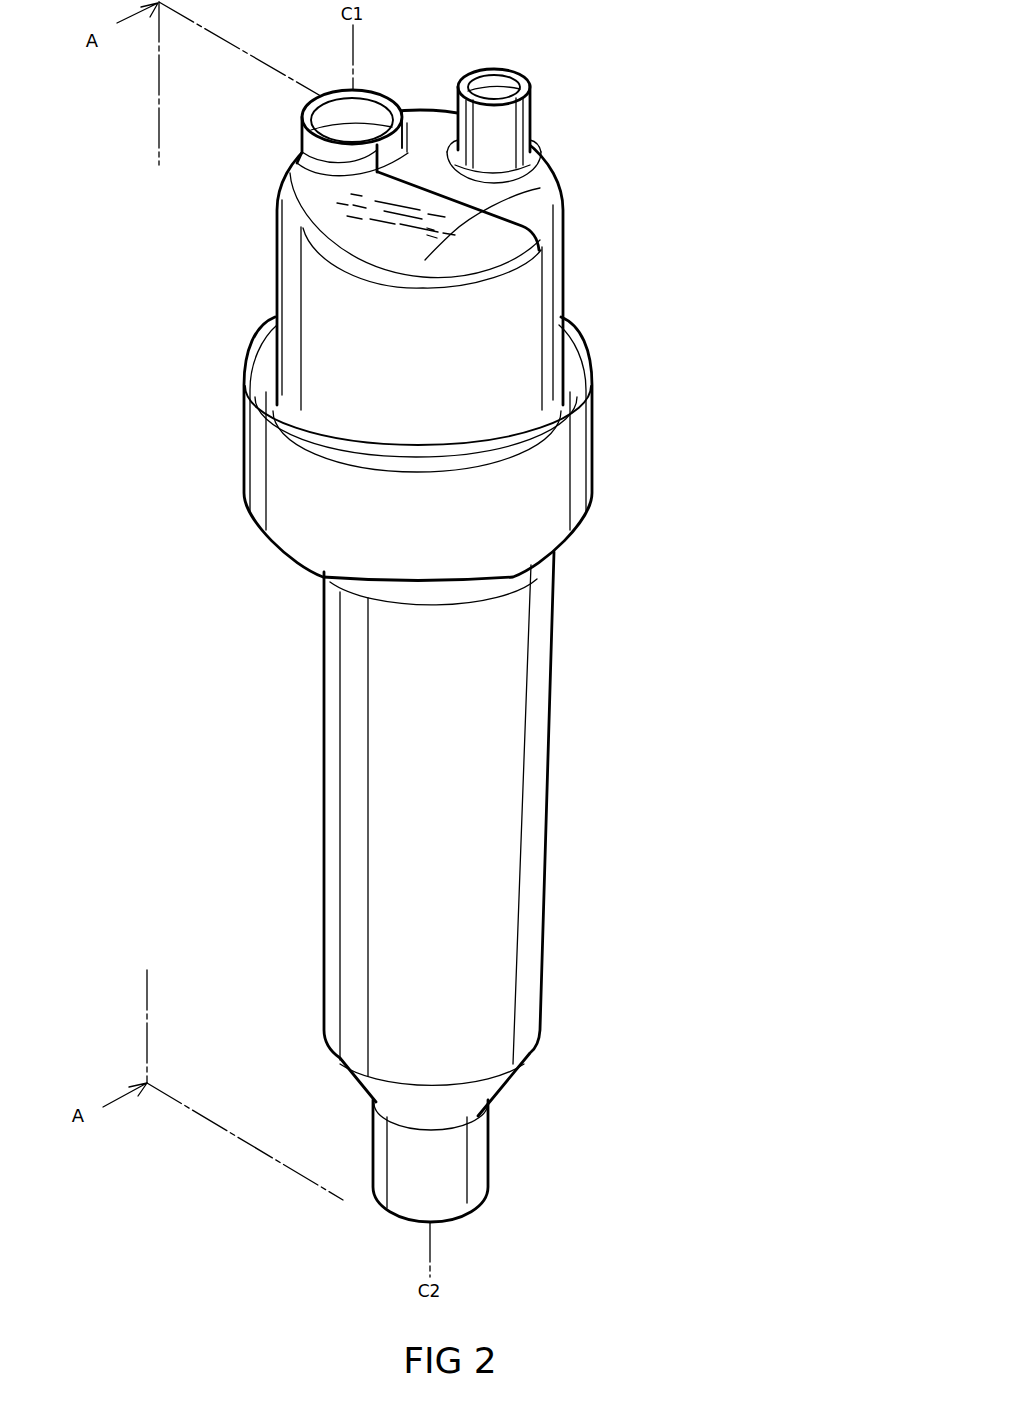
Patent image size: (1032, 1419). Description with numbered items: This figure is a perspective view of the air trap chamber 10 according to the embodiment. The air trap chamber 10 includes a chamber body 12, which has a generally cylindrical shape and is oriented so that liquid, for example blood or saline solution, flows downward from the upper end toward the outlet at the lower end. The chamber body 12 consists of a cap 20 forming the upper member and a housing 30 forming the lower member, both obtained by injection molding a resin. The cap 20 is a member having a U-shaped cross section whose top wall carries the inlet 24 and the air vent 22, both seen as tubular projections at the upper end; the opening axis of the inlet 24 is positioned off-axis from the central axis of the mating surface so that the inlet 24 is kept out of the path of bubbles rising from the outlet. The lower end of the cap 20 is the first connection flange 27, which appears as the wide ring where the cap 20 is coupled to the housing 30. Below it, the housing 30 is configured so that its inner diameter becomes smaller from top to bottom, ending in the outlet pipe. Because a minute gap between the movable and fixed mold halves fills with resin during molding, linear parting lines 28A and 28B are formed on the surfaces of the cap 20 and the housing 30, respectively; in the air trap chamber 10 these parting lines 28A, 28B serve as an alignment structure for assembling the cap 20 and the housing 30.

The air trap chamber 10 is at (120, 402).
The chamber body 12 is at (733, 548).
The cap 20 is at (608, 461).
The air vent 22 is at (500, 82).
The inlet 24 is at (308, 104).
The first connection flange 27 is at (297, 510).
The parting line 28A is at (540, 188).
The parting line 28B is at (522, 937).
The housing 30 is at (573, 760).